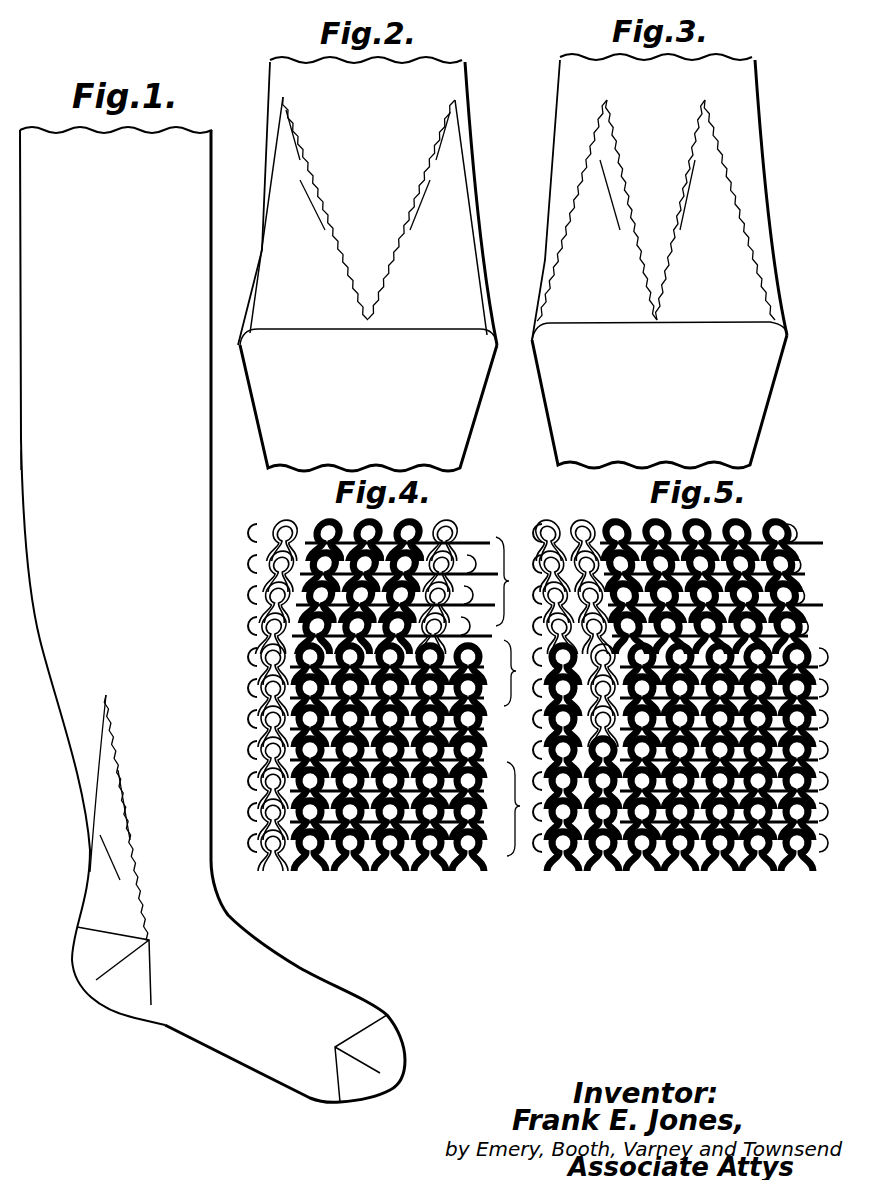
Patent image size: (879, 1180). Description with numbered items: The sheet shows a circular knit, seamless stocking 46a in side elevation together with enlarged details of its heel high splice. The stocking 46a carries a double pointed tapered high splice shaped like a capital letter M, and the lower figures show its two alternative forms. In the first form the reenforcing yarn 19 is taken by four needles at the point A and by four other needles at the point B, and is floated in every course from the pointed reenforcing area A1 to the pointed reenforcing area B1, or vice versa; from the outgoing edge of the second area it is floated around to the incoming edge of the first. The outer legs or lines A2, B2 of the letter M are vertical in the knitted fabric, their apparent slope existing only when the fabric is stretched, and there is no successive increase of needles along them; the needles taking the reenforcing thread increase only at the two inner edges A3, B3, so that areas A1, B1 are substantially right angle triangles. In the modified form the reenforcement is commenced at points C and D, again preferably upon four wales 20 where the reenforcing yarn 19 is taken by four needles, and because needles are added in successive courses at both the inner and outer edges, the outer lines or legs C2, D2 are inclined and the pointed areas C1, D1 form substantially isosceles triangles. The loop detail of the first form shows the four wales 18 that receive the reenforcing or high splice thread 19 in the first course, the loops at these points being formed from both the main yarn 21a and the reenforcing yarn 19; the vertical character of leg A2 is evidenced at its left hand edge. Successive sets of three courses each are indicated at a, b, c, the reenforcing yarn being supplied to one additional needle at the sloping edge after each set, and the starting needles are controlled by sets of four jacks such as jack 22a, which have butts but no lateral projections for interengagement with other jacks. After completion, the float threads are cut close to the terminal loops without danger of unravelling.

In FIG. 1, the starting point of reenforcement D is at (106, 695).
In FIG. 3, the starting point of reenforcement D is at (705, 100).
In FIG. 1, the pointed reenforcing area D1 is at (108, 868).
In FIG. 3, the pointed reenforcing area D1 is at (700, 170).
In FIG. 1, the outer line or leg D2 is at (128, 808).
In FIG. 3, the outer line or leg D2 is at (752, 230).
In FIG. 1, the stocking 46a is at (125, 474).
In FIG. 2, the starting point of reenforcement A is at (283, 97).
In FIG. 2, the pointed reenforcing area A1 is at (293, 185).
In FIG. 2, the outer leg or line A2 is at (268, 193).
In FIG. 4, the outer leg or line A2 is at (252, 700).
In FIG. 2, the inner edge A3 is at (293, 130).
In FIG. 2, the starting point of reenforcement B is at (455, 100).
In FIG. 2, the pointed reenforcing area B1 is at (433, 183).
In FIG. 2, the outer leg or line B2 is at (467, 192).
In FIG. 2, the inner edge B3 is at (440, 138).
In FIG. 3, the starting point of reenforcement C is at (607, 100).
In FIG. 3, the pointed reenforcing area C1 is at (607, 181).
In FIG. 3, the outer line or leg C2 is at (560, 233).
In FIG. 4, the wales 18 is at (415, 512).
In FIG. 4, the reenforcing yarn 19 is at (283, 520).
In FIG. 5, the reenforcing yarn 19 is at (602, 518).
In FIG. 5, the wales 20 is at (760, 510).
In FIG. 4, the main yarn 21a is at (472, 505).
In FIG. 5, the main yarn 21a is at (790, 632).
In FIG. 4, the jack 22a is at (485, 540).
In FIG. 5, the jack 22a is at (805, 540).
In FIG. 4, the set of three courses a is at (505, 581).
In FIG. 4, the set of three courses b is at (514, 673).
In FIG. 4, the set of three courses c is at (514, 820).